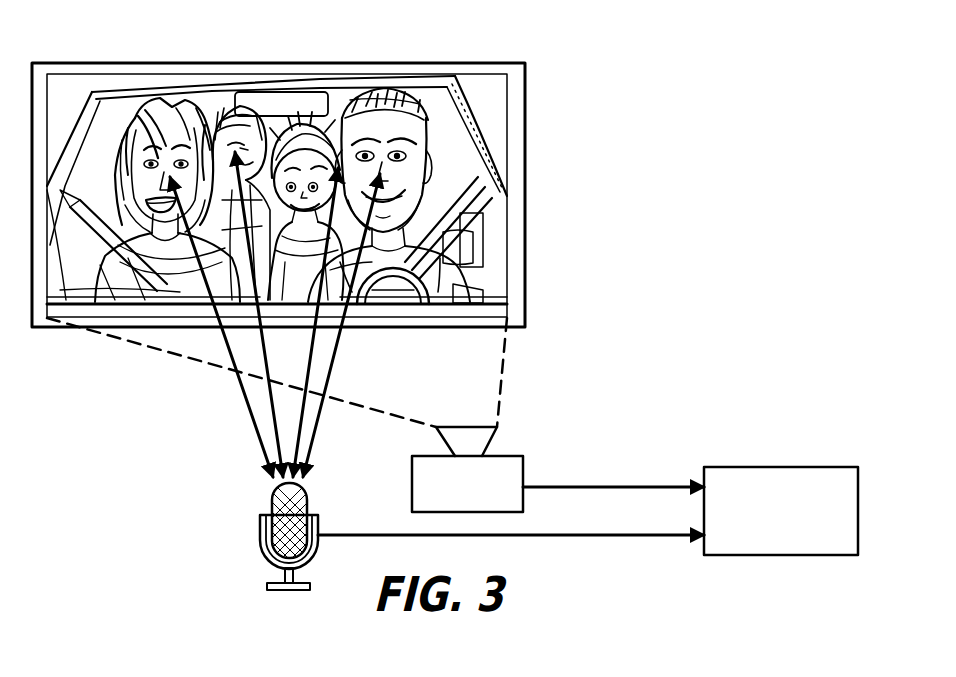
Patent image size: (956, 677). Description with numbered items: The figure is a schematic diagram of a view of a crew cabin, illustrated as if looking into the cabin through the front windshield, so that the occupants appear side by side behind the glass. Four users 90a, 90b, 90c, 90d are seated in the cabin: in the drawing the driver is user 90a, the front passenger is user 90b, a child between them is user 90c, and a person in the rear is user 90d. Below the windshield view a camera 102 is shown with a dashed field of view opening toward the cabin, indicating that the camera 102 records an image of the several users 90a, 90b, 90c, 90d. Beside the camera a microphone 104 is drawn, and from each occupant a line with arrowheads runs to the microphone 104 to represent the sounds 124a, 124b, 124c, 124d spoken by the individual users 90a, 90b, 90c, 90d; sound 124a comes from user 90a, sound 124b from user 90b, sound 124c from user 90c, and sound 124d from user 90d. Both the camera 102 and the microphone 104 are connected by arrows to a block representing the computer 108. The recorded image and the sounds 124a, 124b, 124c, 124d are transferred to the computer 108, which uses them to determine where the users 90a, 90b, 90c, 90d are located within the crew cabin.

The user 90a is at (385, 122).
The user 90b is at (168, 140).
The user 90c is at (293, 160).
The user 90d is at (235, 133).
The camera 102 is at (412, 483).
The microphone 104 is at (272, 500).
The computer 108 is at (785, 467).
The sound 124a is at (337, 345).
The sound 124b is at (240, 378).
The sound 124c is at (310, 376).
The sound 124d is at (270, 400).